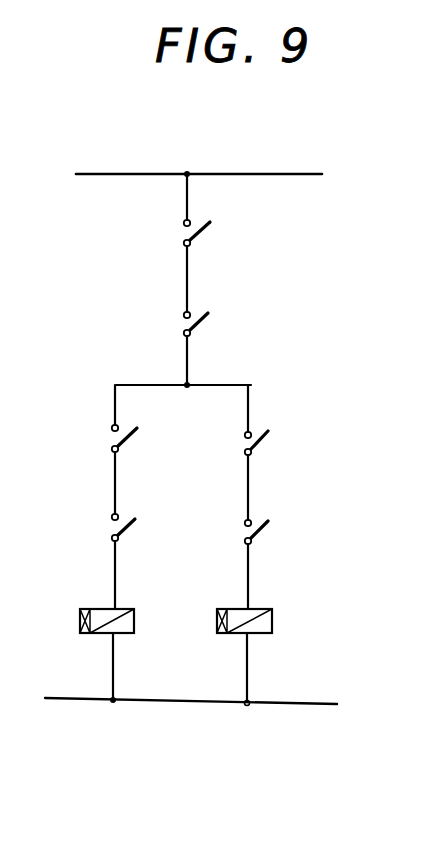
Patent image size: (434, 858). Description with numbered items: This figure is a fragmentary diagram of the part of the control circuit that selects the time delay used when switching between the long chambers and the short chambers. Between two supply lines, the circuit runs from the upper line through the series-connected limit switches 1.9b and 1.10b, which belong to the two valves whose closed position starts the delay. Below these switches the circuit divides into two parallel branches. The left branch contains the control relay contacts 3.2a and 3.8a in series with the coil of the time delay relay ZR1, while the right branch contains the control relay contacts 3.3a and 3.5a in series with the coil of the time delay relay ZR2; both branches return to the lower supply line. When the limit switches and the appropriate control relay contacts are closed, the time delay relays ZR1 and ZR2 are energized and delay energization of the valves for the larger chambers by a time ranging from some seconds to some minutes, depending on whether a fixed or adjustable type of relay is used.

The limit switch 1.9b is at (200, 238).
The limit switch 1.10b is at (198, 331).
The control relay 3.2a is at (128, 445).
The control relay 3.3a is at (262, 449).
The control relay 3.8a is at (122, 536).
The control relay 3.5a is at (266, 534).
The time delay relay ZR1 is at (80, 622).
The time delay relay ZR2 is at (272, 628).